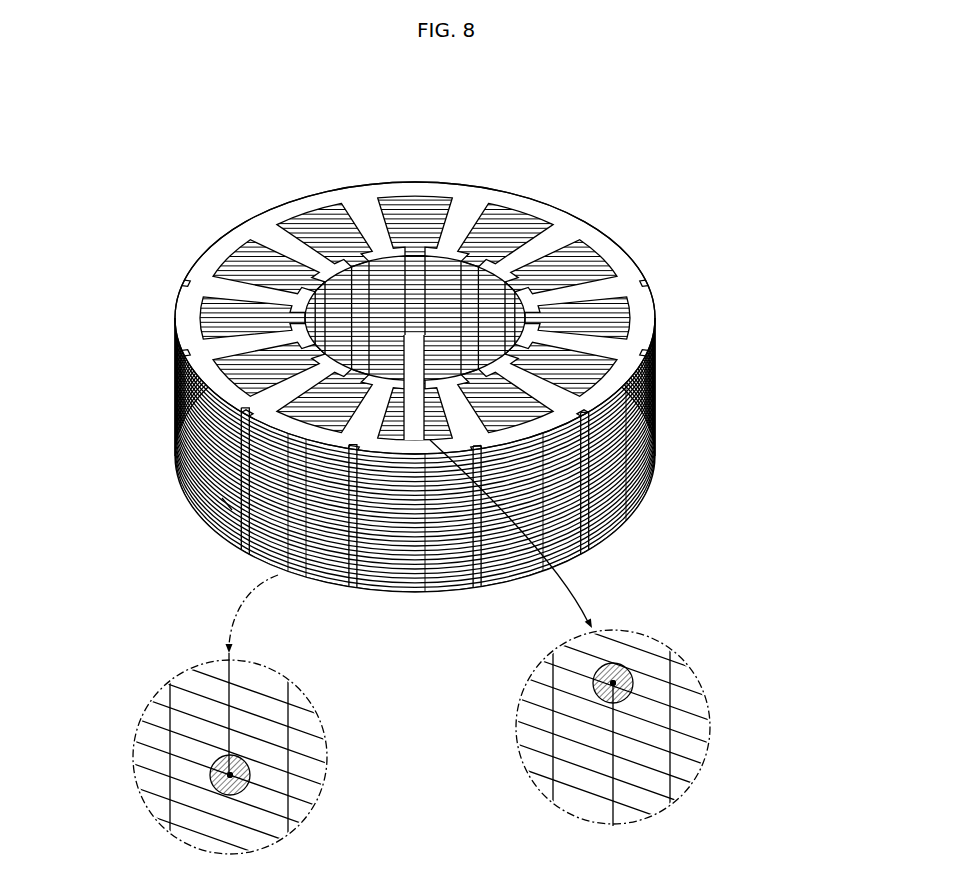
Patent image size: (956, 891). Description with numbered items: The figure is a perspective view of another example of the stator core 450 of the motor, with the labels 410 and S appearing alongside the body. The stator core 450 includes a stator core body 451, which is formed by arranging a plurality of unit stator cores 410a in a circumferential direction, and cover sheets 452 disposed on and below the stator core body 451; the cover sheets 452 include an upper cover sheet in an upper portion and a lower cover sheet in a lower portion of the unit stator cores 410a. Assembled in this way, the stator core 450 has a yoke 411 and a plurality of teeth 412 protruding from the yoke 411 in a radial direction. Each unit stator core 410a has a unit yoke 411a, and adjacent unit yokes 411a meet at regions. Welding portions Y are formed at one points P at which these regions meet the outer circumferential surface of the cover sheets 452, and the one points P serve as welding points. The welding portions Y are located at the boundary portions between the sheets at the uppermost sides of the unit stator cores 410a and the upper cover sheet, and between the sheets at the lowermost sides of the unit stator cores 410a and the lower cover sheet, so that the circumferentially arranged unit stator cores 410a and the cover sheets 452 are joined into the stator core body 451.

The stator core 450 is at (177, 112).
The stator core body 451 is at (674, 343).
The stator core 410 is at (415, 455).
The yoke 411 is at (190, 317).
The teeth 412 is at (285, 242).
The cover sheets 452 is at (612, 253).
The stacked laminations S is at (232, 508).
The unit stator core 410a is at (150, 709).
The unit yoke 411a is at (155, 742).
The welding portion Y is at (207, 774).
The one point P is at (224, 790).